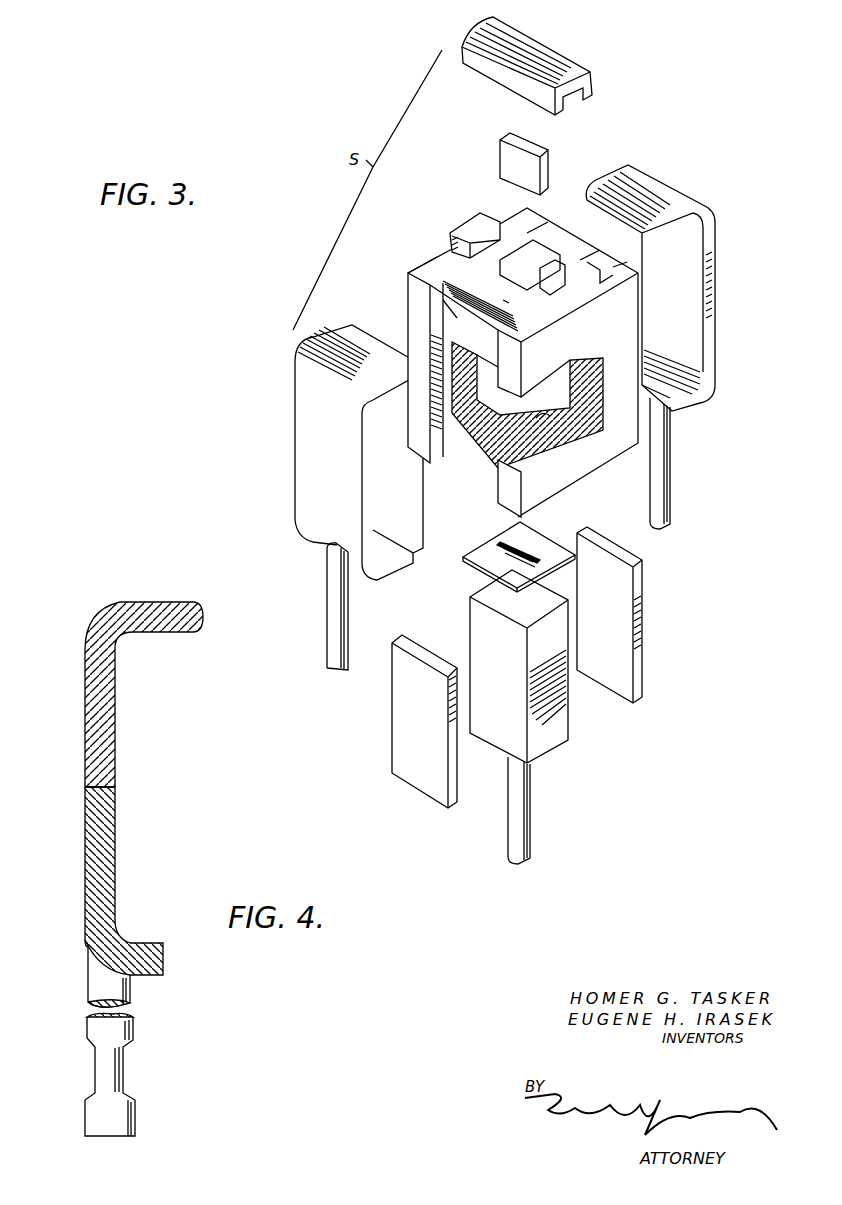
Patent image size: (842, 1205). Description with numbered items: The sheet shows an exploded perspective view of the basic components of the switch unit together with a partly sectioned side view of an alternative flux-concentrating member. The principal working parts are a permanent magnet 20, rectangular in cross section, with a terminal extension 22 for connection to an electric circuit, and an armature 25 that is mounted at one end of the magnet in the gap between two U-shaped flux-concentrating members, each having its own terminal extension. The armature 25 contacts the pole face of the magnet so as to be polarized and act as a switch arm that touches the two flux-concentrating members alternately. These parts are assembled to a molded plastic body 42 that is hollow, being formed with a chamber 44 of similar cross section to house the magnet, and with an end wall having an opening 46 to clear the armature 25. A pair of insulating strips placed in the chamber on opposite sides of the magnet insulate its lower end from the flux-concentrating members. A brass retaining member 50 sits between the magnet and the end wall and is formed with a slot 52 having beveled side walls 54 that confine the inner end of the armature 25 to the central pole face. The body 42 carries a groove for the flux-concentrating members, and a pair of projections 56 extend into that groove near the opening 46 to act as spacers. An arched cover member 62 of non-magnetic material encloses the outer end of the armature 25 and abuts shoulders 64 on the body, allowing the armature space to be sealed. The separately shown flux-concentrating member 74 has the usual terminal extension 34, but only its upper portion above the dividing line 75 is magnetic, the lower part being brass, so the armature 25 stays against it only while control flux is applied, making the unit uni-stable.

In FIG. 3, the permanent magnet 20 is at (550, 717).
In FIG. 3, the terminal extension 22 is at (518, 815).
In FIG. 3, the armature 25 is at (533, 152).
In FIG. 4, the terminal extension 34 is at (100, 984).
In FIG. 3, the body 42 is at (630, 268).
In FIG. 3, the chamber 44 is at (573, 447).
In FIG. 3, the opening 46 is at (497, 294).
In FIG. 3, the retaining member 50 is at (555, 557).
In FIG. 3, the slot 52 is at (502, 547).
In FIG. 3, the beveled side wall 54 is at (527, 557).
In FIG. 3, the projection 56 is at (540, 277).
In FIG. 3, the arched cover member 62 is at (553, 50).
In FIG. 3, the shoulder 64 is at (473, 232).
In FIG. 4, the flux-concentrating member 74 is at (86, 628).
In FIG. 4, the dividing line 75 is at (100, 786).